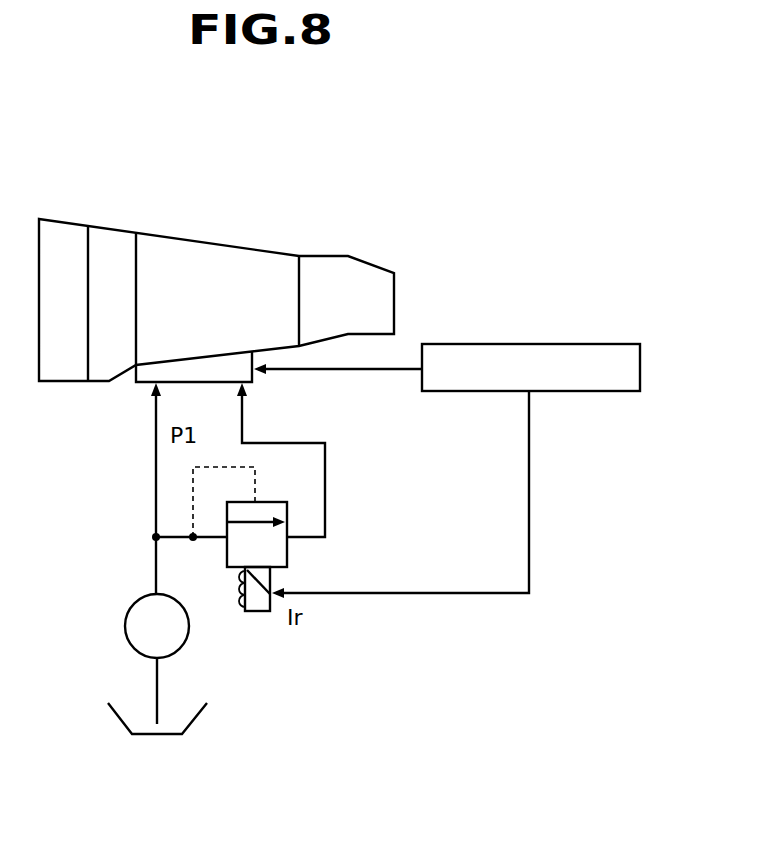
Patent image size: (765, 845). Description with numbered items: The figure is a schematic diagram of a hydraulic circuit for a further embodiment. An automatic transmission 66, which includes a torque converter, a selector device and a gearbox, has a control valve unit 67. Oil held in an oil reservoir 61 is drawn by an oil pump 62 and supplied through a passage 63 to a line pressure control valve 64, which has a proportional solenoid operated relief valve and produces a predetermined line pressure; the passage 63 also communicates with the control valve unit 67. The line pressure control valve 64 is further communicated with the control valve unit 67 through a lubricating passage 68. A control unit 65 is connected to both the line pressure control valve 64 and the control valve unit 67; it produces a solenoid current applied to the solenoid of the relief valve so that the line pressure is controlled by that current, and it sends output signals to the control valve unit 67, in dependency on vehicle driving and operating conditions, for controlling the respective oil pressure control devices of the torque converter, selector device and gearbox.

The oil reservoir 61 is at (198, 714).
The oil pump 62 is at (190, 620).
The passage 63 is at (155, 493).
The line pressure control valve 64 is at (283, 552).
The control unit 65 is at (585, 392).
The automatic transmission 66 is at (253, 255).
The control valve unit 67 is at (142, 384).
The lubricating passage 68 is at (300, 441).